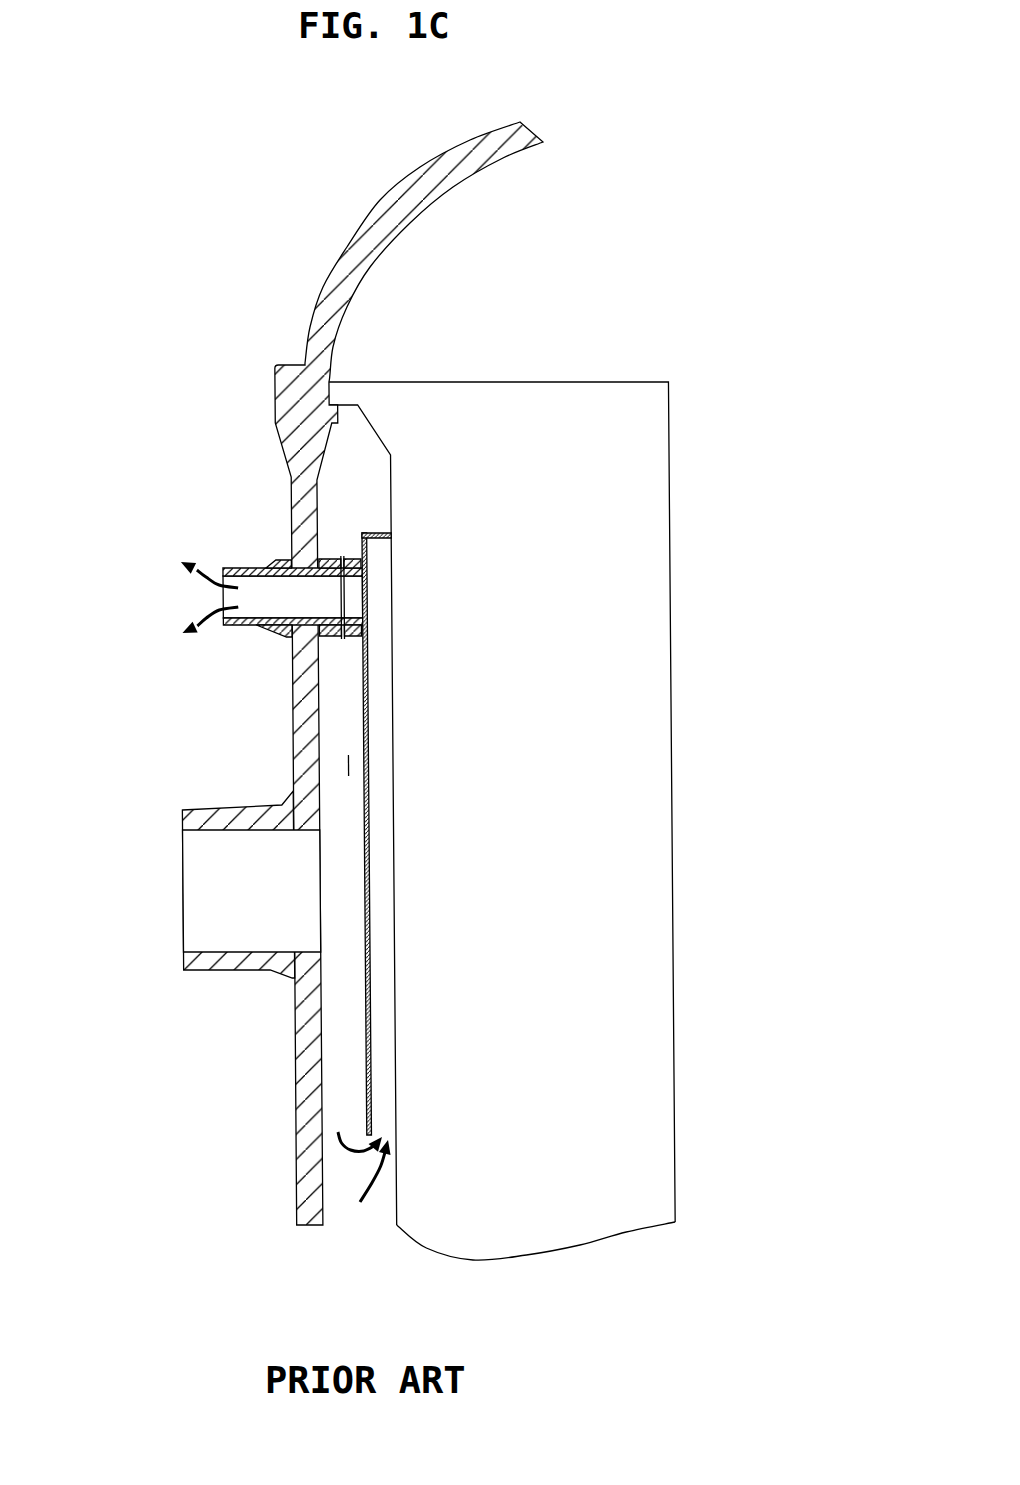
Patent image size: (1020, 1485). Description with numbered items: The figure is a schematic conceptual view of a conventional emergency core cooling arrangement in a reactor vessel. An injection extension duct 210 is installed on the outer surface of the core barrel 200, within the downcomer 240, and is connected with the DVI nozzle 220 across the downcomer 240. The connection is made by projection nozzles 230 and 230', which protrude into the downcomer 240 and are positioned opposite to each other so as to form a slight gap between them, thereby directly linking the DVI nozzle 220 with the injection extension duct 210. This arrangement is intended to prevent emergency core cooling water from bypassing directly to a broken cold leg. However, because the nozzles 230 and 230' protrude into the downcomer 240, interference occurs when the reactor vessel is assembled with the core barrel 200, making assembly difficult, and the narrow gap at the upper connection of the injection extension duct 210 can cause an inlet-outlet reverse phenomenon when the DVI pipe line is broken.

The core barrel 200 is at (390, 482).
The injection extension duct 210 is at (361, 698).
The DVI nozzle 220 is at (233, 628).
The projection nozzle 230 is at (248, 566).
The projection nozzle 230' is at (275, 540).
The downcomer 240 is at (346, 765).